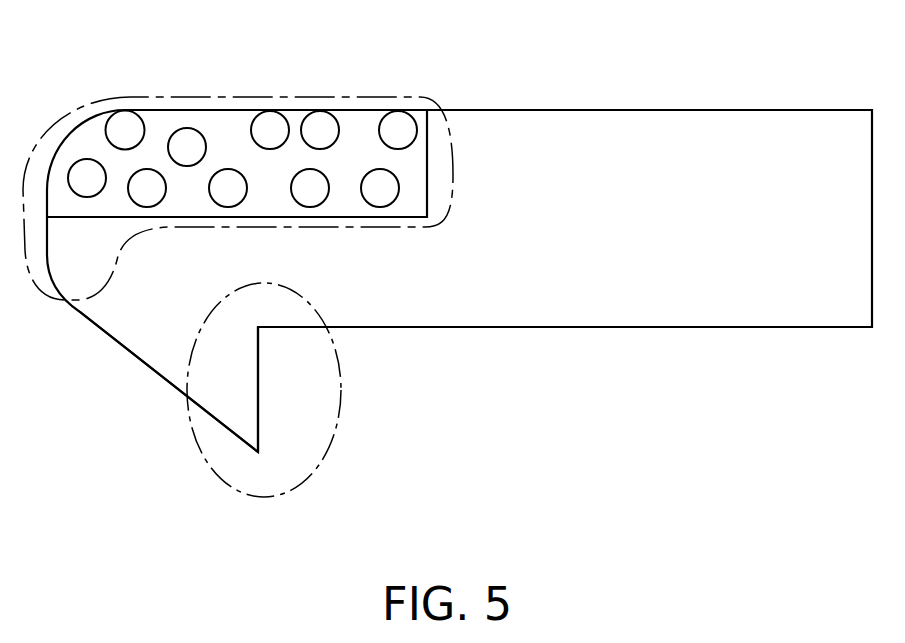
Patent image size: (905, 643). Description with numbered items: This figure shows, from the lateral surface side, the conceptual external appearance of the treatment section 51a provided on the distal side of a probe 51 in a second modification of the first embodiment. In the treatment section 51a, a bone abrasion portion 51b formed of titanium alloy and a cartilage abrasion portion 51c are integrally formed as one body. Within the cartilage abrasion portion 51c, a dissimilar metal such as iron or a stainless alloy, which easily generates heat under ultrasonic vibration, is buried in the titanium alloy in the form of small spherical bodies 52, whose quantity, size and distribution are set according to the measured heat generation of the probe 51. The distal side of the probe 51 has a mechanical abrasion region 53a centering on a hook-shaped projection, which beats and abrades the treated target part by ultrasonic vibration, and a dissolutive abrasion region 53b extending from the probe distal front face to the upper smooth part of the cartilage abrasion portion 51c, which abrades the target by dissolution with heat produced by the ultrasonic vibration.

The probe 51 is at (858, 108).
The treatment section 51a is at (153, 389).
The bone abrasion portion 51b is at (258, 435).
The cartilage abrasion portion 51c is at (361, 125).
The small spherical bodies 52 is at (272, 118).
The mechanical abrasion region 53a is at (340, 383).
The dissolutive abrasion region 53b is at (142, 96).